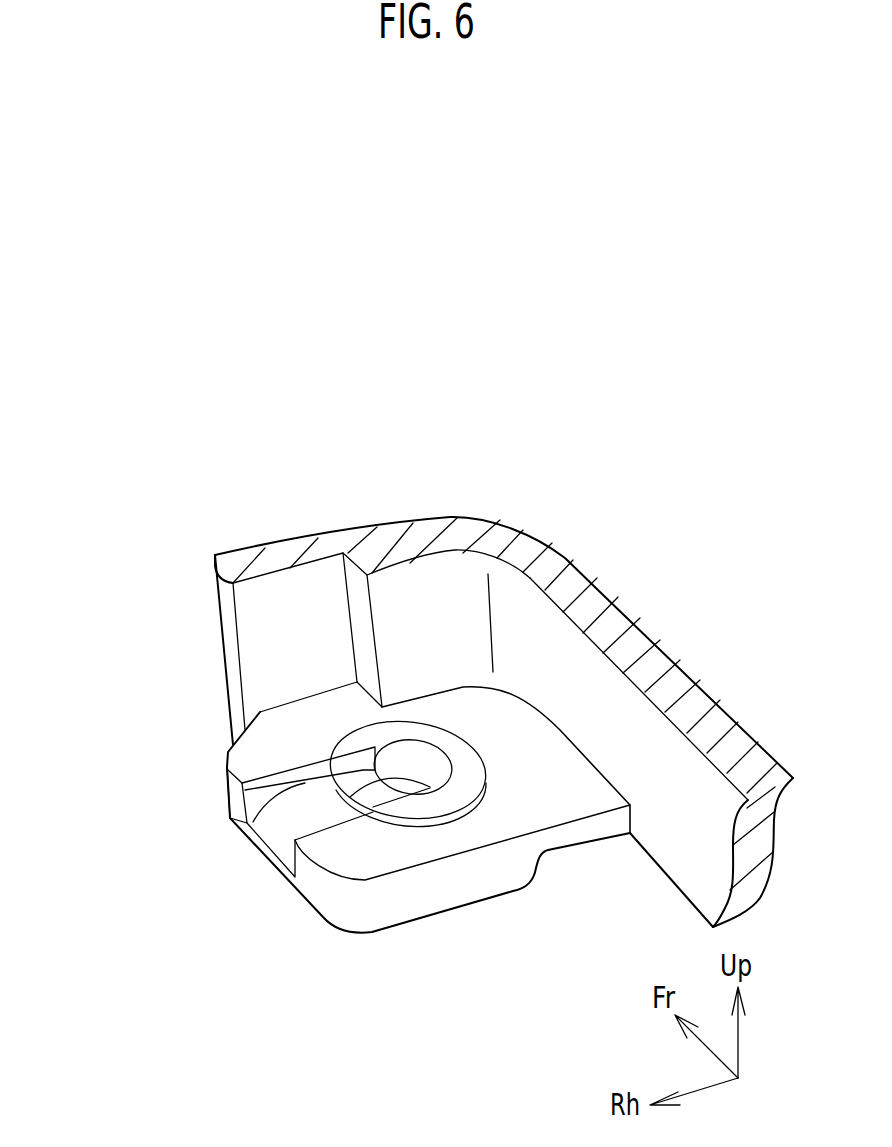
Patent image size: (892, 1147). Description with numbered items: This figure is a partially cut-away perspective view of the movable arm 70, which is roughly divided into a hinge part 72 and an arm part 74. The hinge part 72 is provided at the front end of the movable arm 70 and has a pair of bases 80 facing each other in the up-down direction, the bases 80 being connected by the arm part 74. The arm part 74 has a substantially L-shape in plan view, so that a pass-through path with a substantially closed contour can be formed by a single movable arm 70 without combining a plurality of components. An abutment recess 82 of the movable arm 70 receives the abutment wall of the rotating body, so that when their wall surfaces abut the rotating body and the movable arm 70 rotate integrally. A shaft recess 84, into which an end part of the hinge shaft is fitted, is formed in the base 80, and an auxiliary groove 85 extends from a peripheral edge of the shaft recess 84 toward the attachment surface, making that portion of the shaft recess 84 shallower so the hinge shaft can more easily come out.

The movable arm 70 is at (475, 488).
The hinge part 72 is at (220, 815).
The arm part 74 is at (640, 617).
The base 80 is at (453, 893).
The abutment recess 82 is at (303, 600).
The shaft recess 84 is at (400, 787).
The auxiliary groove 85 is at (312, 807).